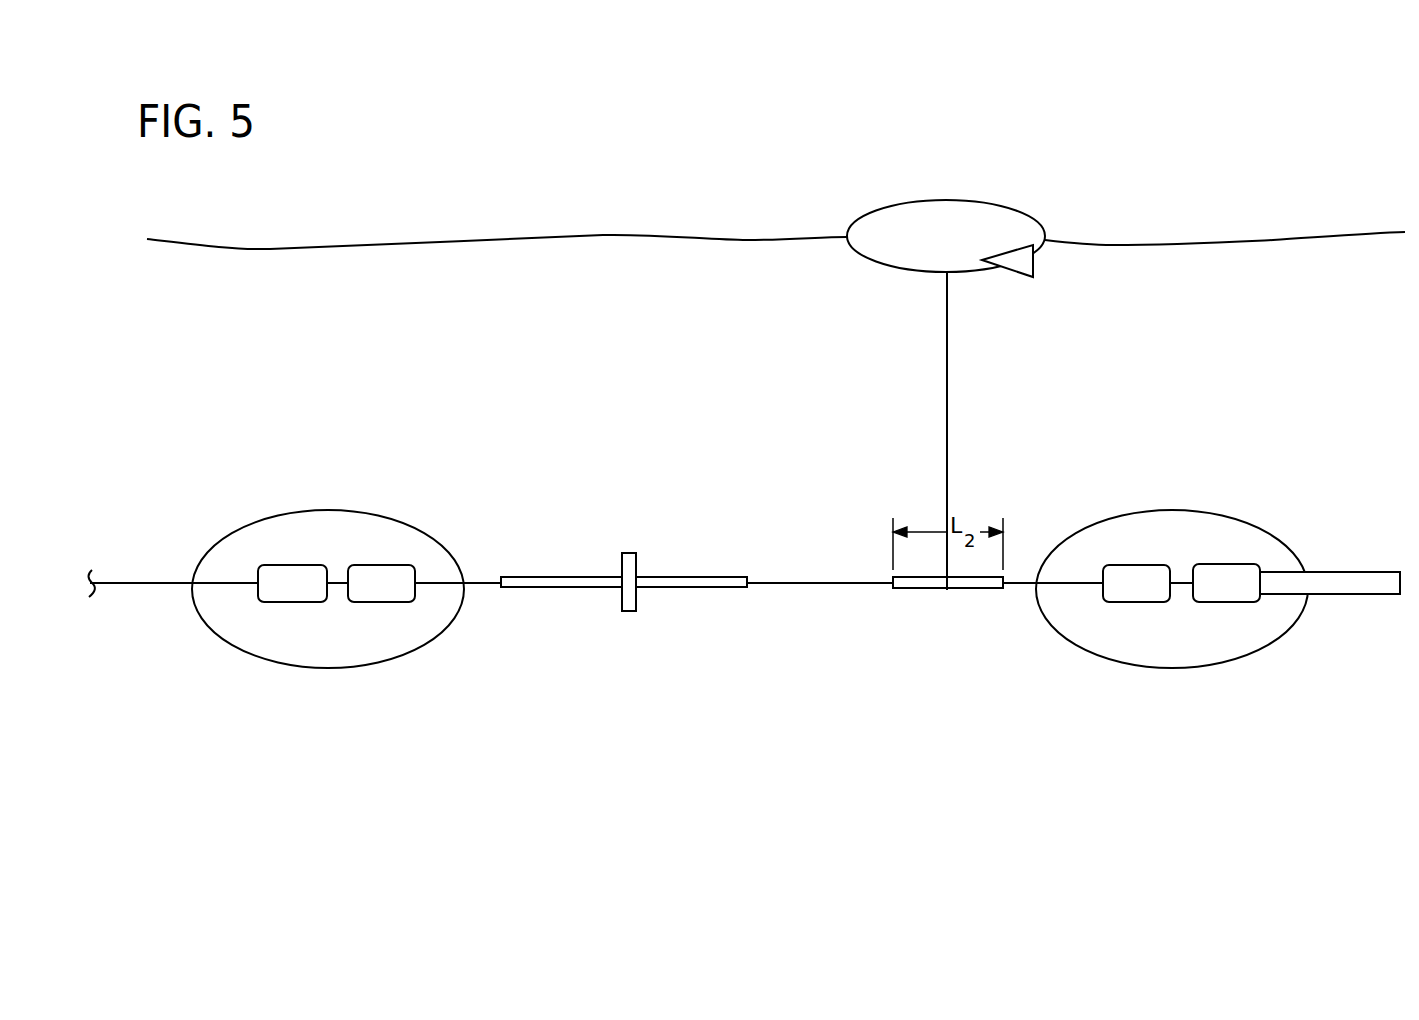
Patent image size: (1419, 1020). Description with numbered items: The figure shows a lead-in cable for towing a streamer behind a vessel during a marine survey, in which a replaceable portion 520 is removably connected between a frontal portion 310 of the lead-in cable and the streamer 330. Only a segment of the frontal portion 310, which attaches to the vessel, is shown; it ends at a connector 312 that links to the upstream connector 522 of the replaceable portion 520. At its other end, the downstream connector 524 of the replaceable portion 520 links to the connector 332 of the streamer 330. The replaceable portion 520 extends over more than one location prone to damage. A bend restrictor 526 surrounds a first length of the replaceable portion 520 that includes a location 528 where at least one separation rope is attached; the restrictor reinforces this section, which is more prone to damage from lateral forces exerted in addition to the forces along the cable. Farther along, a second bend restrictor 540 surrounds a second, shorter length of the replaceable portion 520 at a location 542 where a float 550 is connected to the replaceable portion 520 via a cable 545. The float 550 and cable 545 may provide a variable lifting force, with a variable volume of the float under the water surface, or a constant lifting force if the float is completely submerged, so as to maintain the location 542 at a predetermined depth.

The frontal portion 310 is at (122, 583).
The connector 312 is at (287, 592).
The upstream connector 522 is at (383, 567).
The replaceable portion 520 is at (822, 583).
The bend restrictor 526 is at (688, 582).
The location 528 is at (628, 598).
The second bend restrictor 540 is at (906, 585).
The location 542 is at (947, 583).
The cable 545 is at (947, 408).
The float 550 is at (1015, 205).
The downstream connector 524 is at (1123, 592).
The connector 332 is at (1227, 565).
The streamer 330 is at (1367, 585).